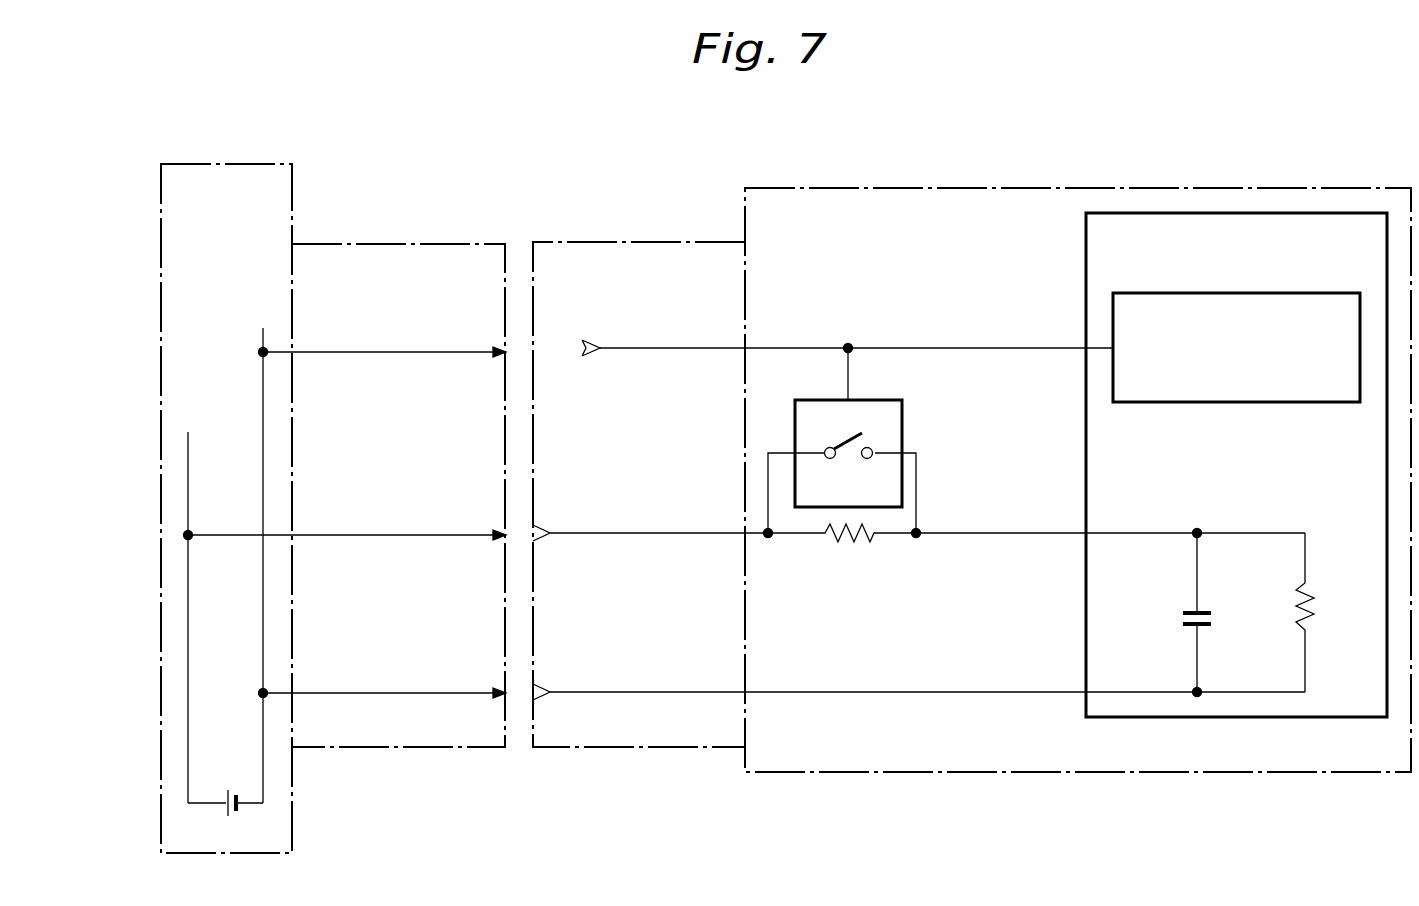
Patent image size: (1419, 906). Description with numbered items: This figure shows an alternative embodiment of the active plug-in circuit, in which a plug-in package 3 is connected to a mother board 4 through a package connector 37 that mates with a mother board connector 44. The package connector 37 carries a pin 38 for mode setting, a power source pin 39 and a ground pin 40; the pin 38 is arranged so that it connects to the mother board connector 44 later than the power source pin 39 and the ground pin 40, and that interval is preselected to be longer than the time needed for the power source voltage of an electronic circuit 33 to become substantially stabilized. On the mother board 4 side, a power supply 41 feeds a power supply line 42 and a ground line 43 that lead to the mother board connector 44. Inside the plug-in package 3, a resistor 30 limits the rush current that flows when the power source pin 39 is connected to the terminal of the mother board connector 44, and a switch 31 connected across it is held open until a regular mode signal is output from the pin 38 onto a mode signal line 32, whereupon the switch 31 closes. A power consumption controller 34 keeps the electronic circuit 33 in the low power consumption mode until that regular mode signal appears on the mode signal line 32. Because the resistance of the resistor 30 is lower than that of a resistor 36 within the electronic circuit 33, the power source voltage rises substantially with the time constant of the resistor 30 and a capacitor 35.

The plug-in package 3 is at (1252, 188).
The mother board 4 is at (292, 188).
The resistor 30 is at (838, 540).
The switch 31 is at (903, 412).
The mode signal line 32 is at (960, 348).
The electronic circuit 33 is at (1086, 245).
The power consumption controller 34 is at (1258, 402).
The capacitor 35 is at (1180, 618).
The resistor 36 is at (1312, 606).
The package connector 37 is at (590, 242).
The pin 38 is at (586, 356).
The power source pin 39 is at (536, 527).
The ground pin 40 is at (536, 686).
The power supply 41 is at (230, 786).
The power supply line 42 is at (188, 432).
The ground line 43 is at (258, 374).
The mother board connector 44 is at (433, 243).